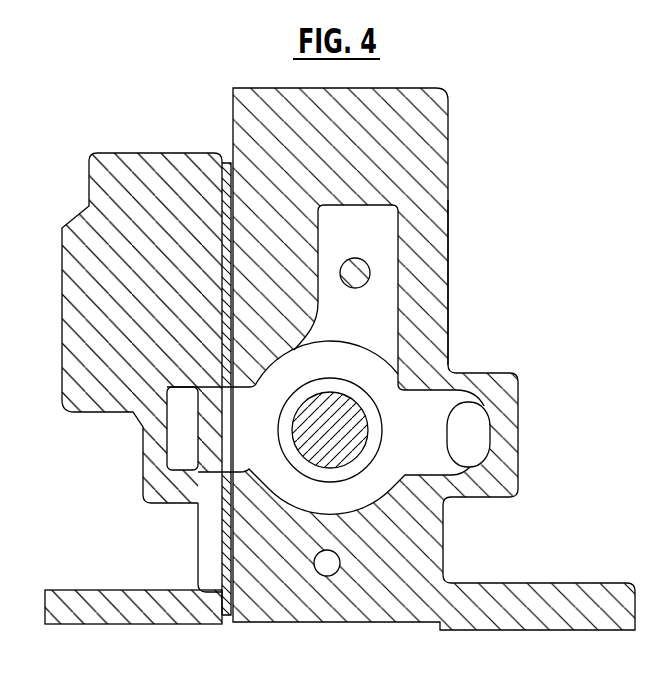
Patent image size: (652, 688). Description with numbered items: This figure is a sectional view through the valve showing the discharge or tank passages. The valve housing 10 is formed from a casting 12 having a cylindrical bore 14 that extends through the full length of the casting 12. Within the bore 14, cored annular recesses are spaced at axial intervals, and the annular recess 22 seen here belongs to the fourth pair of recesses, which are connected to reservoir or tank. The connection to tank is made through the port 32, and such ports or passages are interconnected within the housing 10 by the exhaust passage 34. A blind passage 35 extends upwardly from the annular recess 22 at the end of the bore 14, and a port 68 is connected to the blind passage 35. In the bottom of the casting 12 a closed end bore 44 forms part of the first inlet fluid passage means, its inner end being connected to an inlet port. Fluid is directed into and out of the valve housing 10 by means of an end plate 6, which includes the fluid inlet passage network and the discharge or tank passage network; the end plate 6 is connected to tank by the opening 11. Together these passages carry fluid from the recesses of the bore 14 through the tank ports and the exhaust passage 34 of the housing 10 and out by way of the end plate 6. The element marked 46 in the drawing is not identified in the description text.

The end plate 6 is at (165, 153).
The valve housing 10 is at (461, 163).
The opening 11 is at (209, 470).
The casting 12 is at (441, 316).
The cylindrical bore 14 is at (338, 379).
The annular recess 22 is at (311, 511).
The port 32 is at (250, 473).
The exhaust passage 34 is at (477, 445).
The blind passage 35 is at (369, 234).
The closed end bore 44 is at (339, 558).
The shaft 46 is at (367, 428).
The port 68 is at (364, 268).